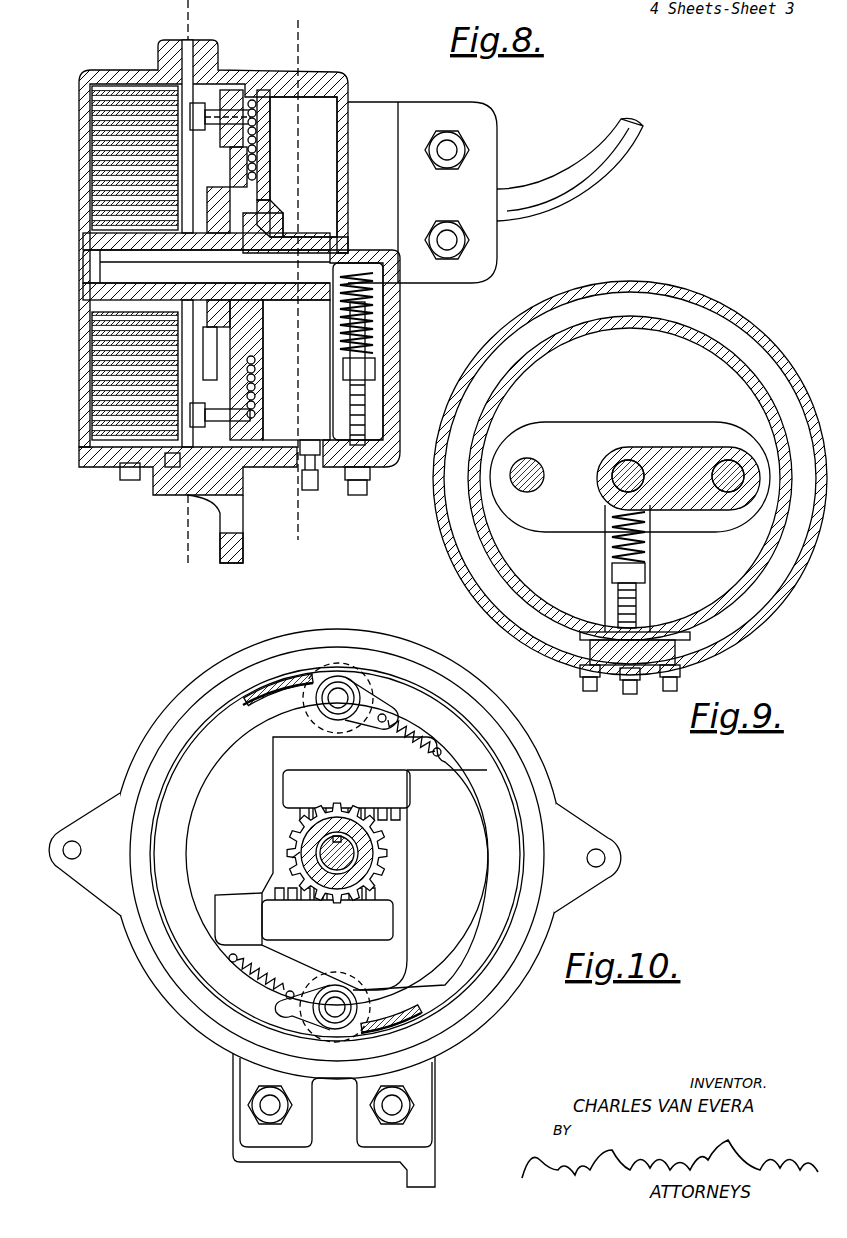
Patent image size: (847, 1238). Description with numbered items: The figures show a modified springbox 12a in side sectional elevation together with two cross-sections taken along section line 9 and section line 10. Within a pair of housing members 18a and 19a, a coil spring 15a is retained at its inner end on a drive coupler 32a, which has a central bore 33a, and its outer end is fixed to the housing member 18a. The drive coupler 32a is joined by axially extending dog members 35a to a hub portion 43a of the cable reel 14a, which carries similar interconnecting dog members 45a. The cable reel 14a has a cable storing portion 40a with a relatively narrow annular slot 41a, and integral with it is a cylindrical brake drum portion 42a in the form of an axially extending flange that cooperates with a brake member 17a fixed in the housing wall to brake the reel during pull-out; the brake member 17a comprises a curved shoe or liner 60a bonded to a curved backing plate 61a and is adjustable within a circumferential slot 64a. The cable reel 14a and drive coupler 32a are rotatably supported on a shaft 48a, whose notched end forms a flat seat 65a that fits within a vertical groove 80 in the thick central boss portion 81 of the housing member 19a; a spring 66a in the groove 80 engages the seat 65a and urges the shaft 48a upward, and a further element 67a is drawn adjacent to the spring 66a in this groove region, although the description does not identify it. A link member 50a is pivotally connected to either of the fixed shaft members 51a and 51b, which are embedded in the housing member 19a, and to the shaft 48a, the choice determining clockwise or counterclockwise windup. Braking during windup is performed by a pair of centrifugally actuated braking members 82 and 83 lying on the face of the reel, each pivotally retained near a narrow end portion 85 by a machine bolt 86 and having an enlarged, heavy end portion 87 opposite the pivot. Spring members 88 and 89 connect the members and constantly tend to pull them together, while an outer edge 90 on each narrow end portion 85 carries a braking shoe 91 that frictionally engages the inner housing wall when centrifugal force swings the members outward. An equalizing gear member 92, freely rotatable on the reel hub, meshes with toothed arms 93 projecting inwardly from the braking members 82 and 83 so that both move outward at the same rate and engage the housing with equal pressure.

In FIG. 8, the section line 9— 9 is at (330, 515).
In FIG. 8, the section line 10— 10 is at (183, 548).
In FIG. 8, the springbox 12a is at (372, 92).
In FIG. 8, the cable reel 14a is at (275, 152).
In FIG. 8, the coil spring 15a is at (88, 432).
In FIG. 8, the brake member 17a is at (312, 468).
In FIG. 9, the brake member 17a is at (692, 646).
In FIG. 8, the housing member 18a is at (86, 180).
In FIG. 8, the housing member 19a is at (401, 394).
In FIG. 8, the drive coupler 32a is at (88, 241).
In FIG. 8, the central bore 33a is at (85, 264).
In FIG. 8, the dog members 35a is at (215, 270).
In FIG. 10, the dog members 35a is at (326, 857).
In FIG. 8, the cable storing portion 40a is at (250, 160).
In FIG. 8, the annular slot 41a is at (256, 98).
In FIG. 8, the brake drum portion 42a is at (280, 163).
In FIG. 8, the hub portion 43a is at (326, 238).
In FIG. 8, the dog members 45a is at (278, 288).
In FIG. 10, the dog members 45a is at (305, 835).
In FIG. 8, the shaft 48a is at (215, 266).
In FIG. 9, the shaft 48a is at (624, 466).
In FIG. 8, the link member 50a is at (286, 302).
In FIG. 9, the link member 50a is at (670, 445).
In FIG. 9, the fixed shaft member 51a is at (728, 459).
In FIG. 9, the fixed shaft member 51b is at (526, 457).
In FIG. 9, the shoe or liner 60a is at (693, 632).
In FIG. 9, the backing plate 61a is at (578, 640).
In FIG. 9, the slot 64a is at (472, 580).
In FIG. 8, the flat seat 65a is at (386, 275).
In FIG. 8, the spring 66a is at (376, 327).
In FIG. 9, the spring 66a is at (648, 548).
In FIG. 9, the adjusting screw 67a is at (638, 592).
In FIG. 8, the groove 80 is at (366, 474).
In FIG. 9, the groove 80 is at (612, 552).
In FIG. 8, the boss portion 81 is at (332, 236).
In FIG. 9, the boss portion 81 is at (614, 428).
In FIG. 10, the braking member 82 is at (348, 863).
In FIG. 10, the braking member 83 is at (447, 812).
In FIG. 10, the narrow end portion 85 is at (370, 700).
In FIG. 8, the machine bolt 86 is at (188, 405).
In FIG. 10, the machine bolt 86 is at (343, 712).
In FIG. 10, the enlarged end portion 87 is at (337, 854).
In FIG. 10, the spring member 88 is at (409, 728).
In FIG. 10, the spring member 89 is at (272, 978).
In FIG. 10, the outer edge 90 is at (262, 699).
In FIG. 10, the braking shoe 91 is at (290, 682).
In FIG. 8, the equalizing gear member 92 is at (224, 219).
In FIG. 10, the equalizing gear member 92 is at (385, 867).
In FIG. 10, the arms 93 is at (333, 770).